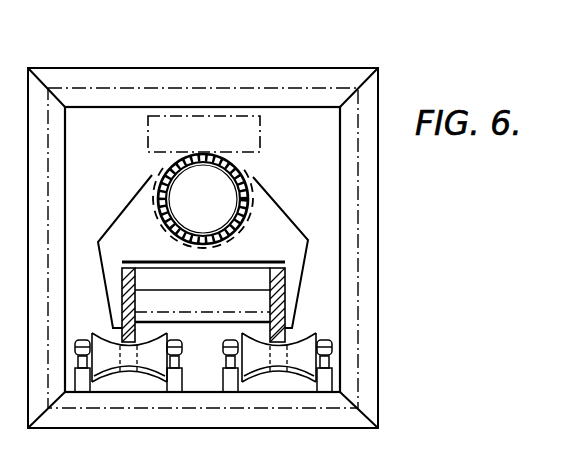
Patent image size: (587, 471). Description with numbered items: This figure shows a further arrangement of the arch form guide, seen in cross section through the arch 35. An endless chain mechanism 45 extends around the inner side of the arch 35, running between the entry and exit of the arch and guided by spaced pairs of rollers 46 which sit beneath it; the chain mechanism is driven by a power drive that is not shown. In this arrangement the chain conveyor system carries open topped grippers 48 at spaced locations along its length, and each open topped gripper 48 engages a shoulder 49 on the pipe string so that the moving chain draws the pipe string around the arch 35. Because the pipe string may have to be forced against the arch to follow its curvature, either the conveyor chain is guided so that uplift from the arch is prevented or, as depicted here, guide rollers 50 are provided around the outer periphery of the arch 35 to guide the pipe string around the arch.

The arch 35 is at (113, 72).
The guide rollers 50 is at (206, 115).
The shoulders 49 is at (228, 187).
The open topped grippers 48 is at (308, 228).
The endless chain mechanism 45 is at (300, 300).
The rollers 46 is at (300, 362).